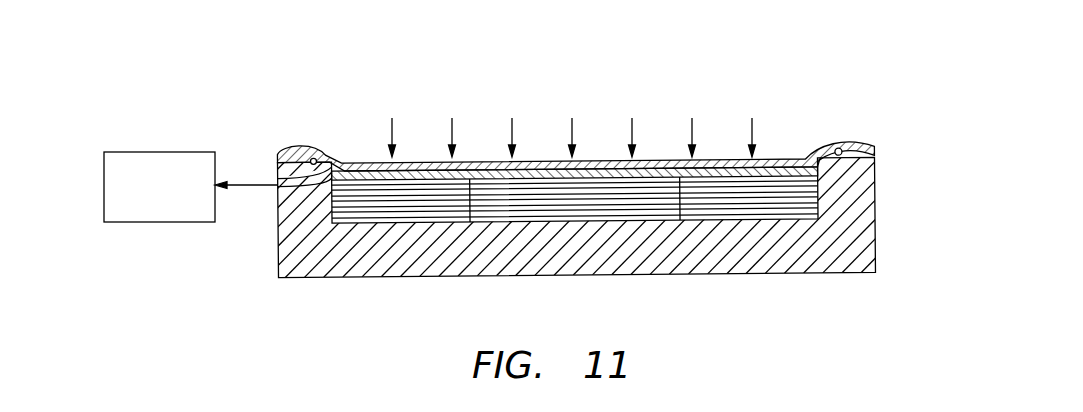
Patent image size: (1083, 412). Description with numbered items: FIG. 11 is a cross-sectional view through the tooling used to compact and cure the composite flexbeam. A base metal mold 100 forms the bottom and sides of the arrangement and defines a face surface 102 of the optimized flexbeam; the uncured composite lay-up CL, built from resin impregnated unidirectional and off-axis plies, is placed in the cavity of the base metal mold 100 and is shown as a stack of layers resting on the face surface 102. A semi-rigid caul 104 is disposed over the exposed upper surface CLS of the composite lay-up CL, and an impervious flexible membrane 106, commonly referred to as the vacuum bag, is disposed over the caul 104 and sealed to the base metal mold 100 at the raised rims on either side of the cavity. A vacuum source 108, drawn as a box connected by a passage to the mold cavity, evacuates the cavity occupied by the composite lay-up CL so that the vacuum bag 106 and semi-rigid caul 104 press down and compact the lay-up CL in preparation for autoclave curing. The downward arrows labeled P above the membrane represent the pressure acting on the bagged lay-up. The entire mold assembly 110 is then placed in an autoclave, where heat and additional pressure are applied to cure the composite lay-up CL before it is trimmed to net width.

The base metal mold 100 is at (398, 268).
The face surface 102 is at (705, 214).
The semi-rigid caul 104 is at (768, 168).
The impervious flexible membrane 106 is at (660, 160).
The vacuum source 108 is at (162, 222).
The mold assembly 110 is at (866, 104).
The composite lay-up CL is at (810, 191).
The exposed upper surface of the composite lay-up CLS is at (368, 162).
The applied pressure P is at (516, 133).